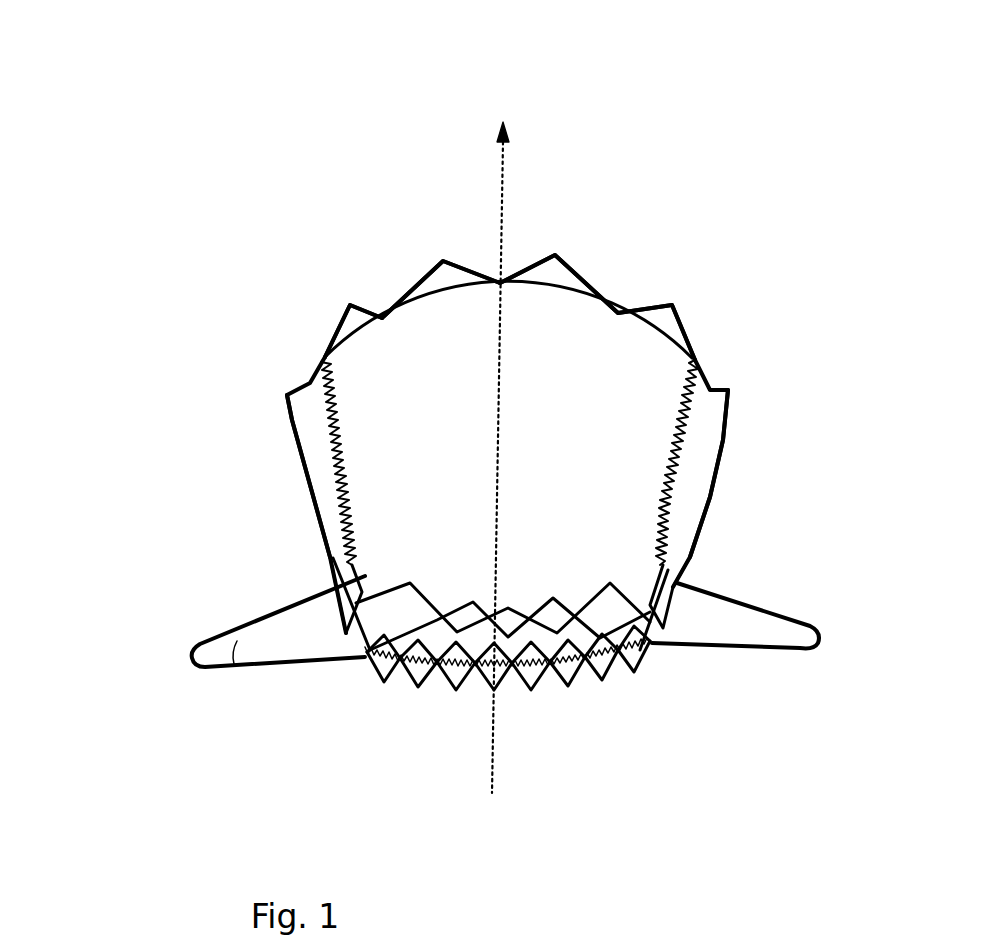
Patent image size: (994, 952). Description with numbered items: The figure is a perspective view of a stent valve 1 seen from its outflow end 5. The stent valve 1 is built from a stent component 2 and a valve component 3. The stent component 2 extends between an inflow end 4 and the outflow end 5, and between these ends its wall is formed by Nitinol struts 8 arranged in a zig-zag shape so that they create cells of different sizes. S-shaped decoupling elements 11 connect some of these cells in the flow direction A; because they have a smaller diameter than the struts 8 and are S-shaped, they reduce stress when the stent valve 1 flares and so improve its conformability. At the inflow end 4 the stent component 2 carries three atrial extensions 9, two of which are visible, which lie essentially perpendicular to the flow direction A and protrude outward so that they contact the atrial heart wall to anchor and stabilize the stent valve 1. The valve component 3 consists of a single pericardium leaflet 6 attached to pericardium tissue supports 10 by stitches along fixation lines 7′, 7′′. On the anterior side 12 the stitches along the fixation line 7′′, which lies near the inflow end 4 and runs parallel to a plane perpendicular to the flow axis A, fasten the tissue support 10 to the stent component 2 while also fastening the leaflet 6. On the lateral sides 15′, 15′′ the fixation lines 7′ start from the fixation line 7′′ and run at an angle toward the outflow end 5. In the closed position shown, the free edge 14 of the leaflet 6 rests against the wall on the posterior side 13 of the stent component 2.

The stent valve 1 is at (262, 292).
The stent component 2 is at (307, 485).
The valve component 3 is at (597, 420).
The inflow end 4 is at (542, 700).
The outflow end 5 is at (408, 225).
The leaflet 6 is at (520, 367).
The fixation line 7′ is at (337, 523).
The fixation line 7′′ is at (444, 660).
The struts 8 is at (638, 643).
The atrial extensions 9 is at (233, 667).
The tissue supports 10 is at (683, 503).
The decoupling elements 11 is at (412, 668).
The anterior side 12 is at (448, 747).
The posterior side 13 is at (437, 197).
The free edge 14 is at (538, 287).
The lateral side 15′ is at (753, 505).
The lateral side 15′′ is at (245, 440).
The flow direction A is at (499, 438).